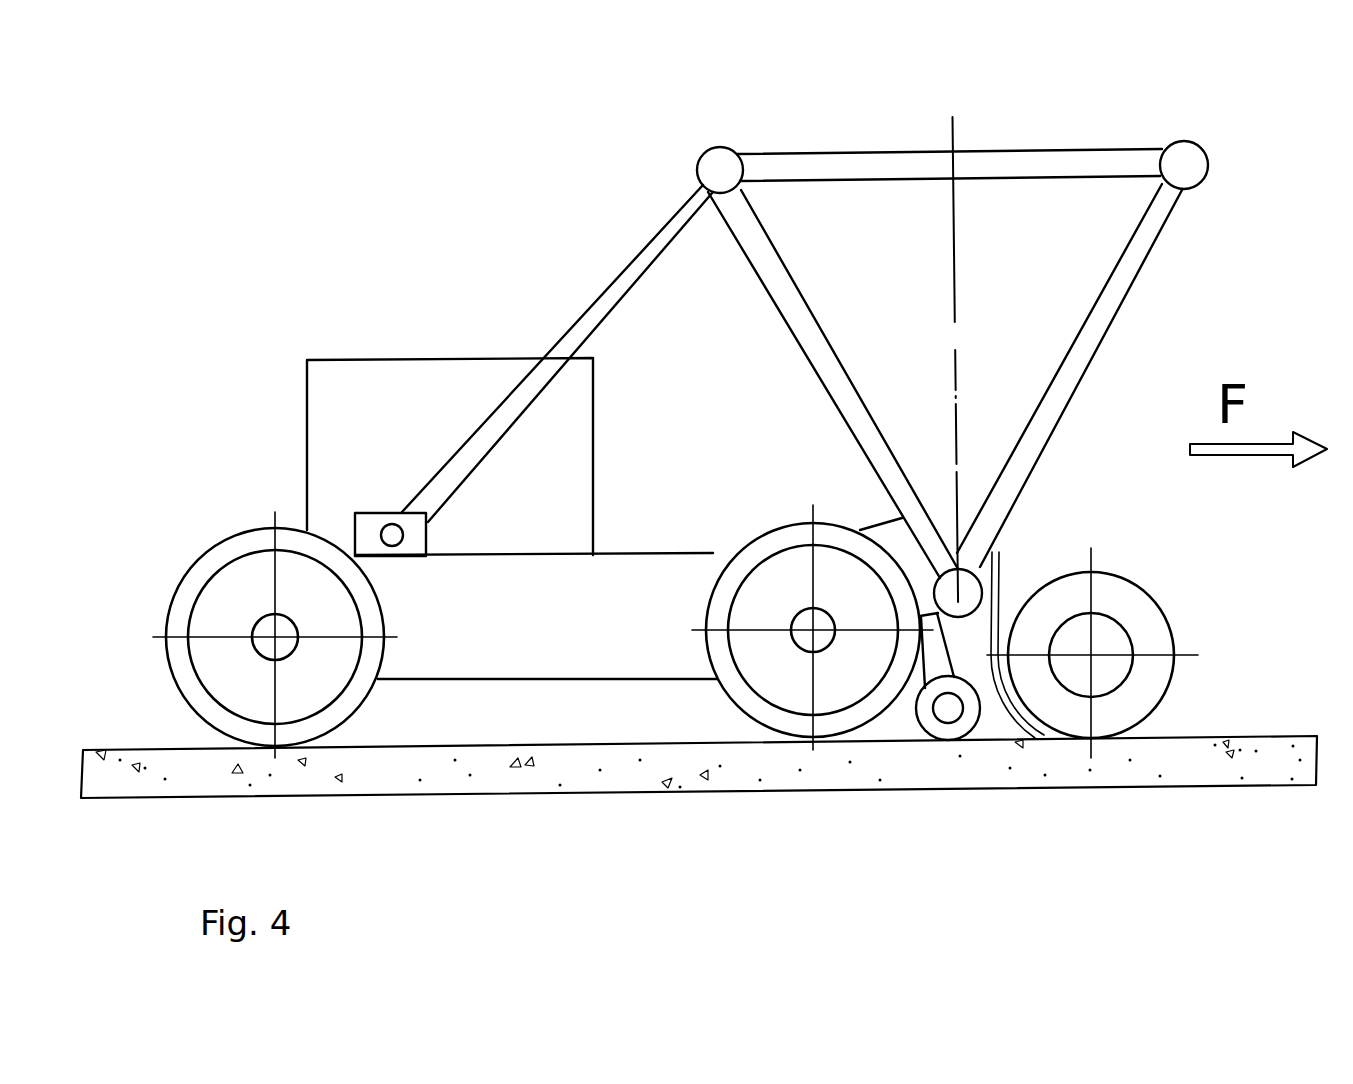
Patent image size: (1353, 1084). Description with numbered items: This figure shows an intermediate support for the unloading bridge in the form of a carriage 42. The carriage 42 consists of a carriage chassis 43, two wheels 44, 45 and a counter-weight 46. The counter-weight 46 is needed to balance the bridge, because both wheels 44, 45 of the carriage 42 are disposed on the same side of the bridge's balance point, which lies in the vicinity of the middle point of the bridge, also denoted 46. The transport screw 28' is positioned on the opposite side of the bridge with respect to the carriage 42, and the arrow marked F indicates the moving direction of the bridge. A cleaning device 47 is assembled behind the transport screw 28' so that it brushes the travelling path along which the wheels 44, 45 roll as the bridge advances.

The carriage 42 is at (459, 328).
The carriage chassis 43 is at (610, 580).
The wheel 44 is at (180, 612).
The wheel 45 is at (760, 548).
The counter-weight 46 is at (955, 133).
The cleaning device 47 is at (945, 716).
The transport screw 28' is at (1115, 652).